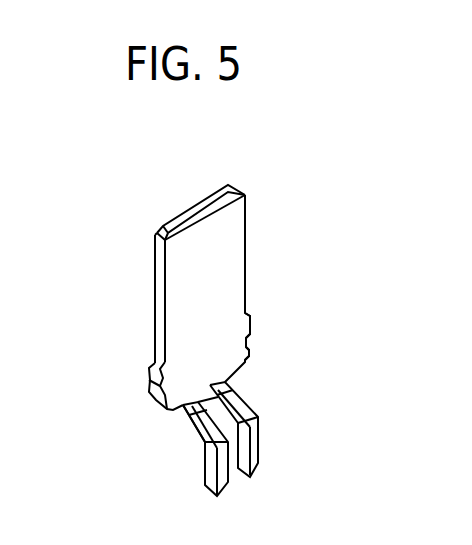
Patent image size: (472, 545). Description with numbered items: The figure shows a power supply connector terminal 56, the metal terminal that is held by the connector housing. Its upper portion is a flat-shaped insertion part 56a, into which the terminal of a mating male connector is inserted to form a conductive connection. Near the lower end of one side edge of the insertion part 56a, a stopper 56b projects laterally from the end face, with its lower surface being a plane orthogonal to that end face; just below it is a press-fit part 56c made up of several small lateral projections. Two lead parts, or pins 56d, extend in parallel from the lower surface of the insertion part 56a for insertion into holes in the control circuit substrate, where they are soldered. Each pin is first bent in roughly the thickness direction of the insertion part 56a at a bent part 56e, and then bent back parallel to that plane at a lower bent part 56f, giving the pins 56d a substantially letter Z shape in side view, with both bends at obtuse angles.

The power supply connector terminal 56 is at (133, 190).
The insertion part 56a is at (230, 247).
The stopper 56b is at (247, 318).
The press-fit part 56c is at (243, 354).
The lead parts (pins) 56d is at (230, 465).
The bent part 56e is at (178, 420).
The bent parts 56f is at (193, 448).